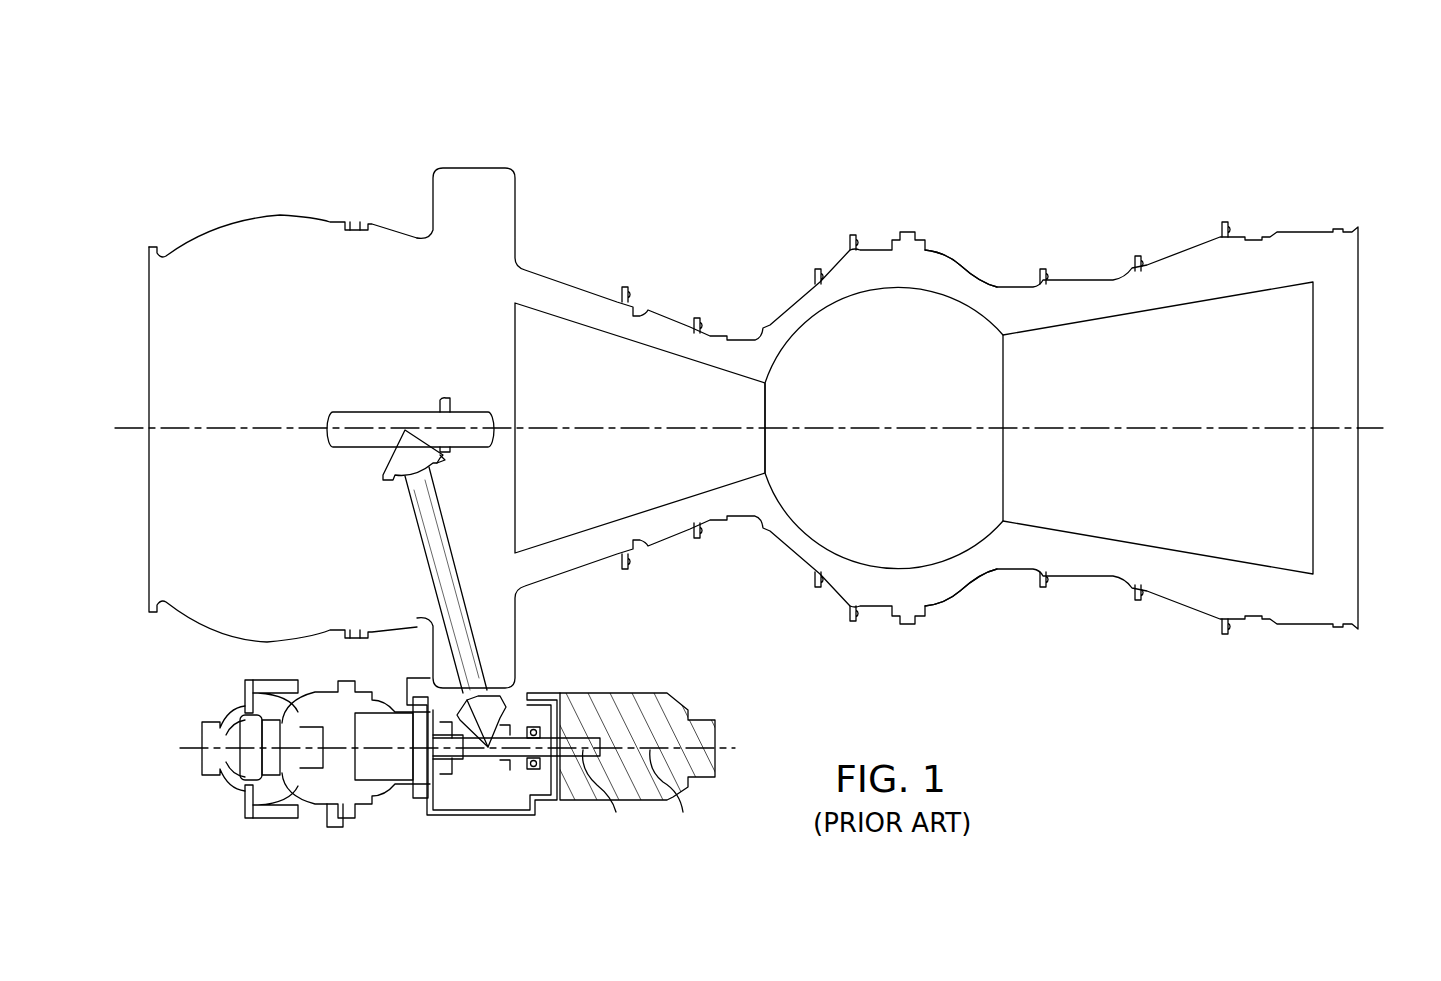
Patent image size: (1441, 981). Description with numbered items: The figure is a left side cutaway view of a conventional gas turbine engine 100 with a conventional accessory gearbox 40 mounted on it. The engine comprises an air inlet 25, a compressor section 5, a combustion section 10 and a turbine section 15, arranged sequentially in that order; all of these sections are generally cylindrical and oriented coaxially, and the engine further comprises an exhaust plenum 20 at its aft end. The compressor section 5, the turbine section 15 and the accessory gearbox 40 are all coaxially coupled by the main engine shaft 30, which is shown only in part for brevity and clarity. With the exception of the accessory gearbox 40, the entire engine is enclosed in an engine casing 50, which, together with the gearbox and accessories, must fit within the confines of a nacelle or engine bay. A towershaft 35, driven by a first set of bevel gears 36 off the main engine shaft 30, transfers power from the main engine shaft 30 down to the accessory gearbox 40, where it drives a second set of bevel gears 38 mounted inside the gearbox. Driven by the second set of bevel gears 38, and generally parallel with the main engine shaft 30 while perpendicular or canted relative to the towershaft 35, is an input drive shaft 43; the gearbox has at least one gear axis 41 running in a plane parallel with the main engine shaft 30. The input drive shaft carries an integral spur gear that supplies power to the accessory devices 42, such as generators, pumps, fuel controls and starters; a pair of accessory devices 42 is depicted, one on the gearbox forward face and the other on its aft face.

The gas turbine engine 100 is at (1236, 100).
The compressor section 5 is at (643, 410).
The combustion section 10 is at (909, 410).
The turbine section 15 is at (1187, 410).
The exhaust plenum 20 is at (1358, 308).
The air inlet 25 is at (200, 233).
The main engine shaft 30 is at (380, 412).
The towershaft 35 is at (424, 540).
The first set of bevel gears 36 is at (455, 472).
The second set of bevel gears 38 is at (518, 688).
The accessory gearbox 40 is at (500, 820).
The gear axis 41 is at (676, 794).
The accessory devices 42 is at (285, 815).
The input drive shaft 43 is at (607, 797).
The engine casing 50 is at (960, 259).